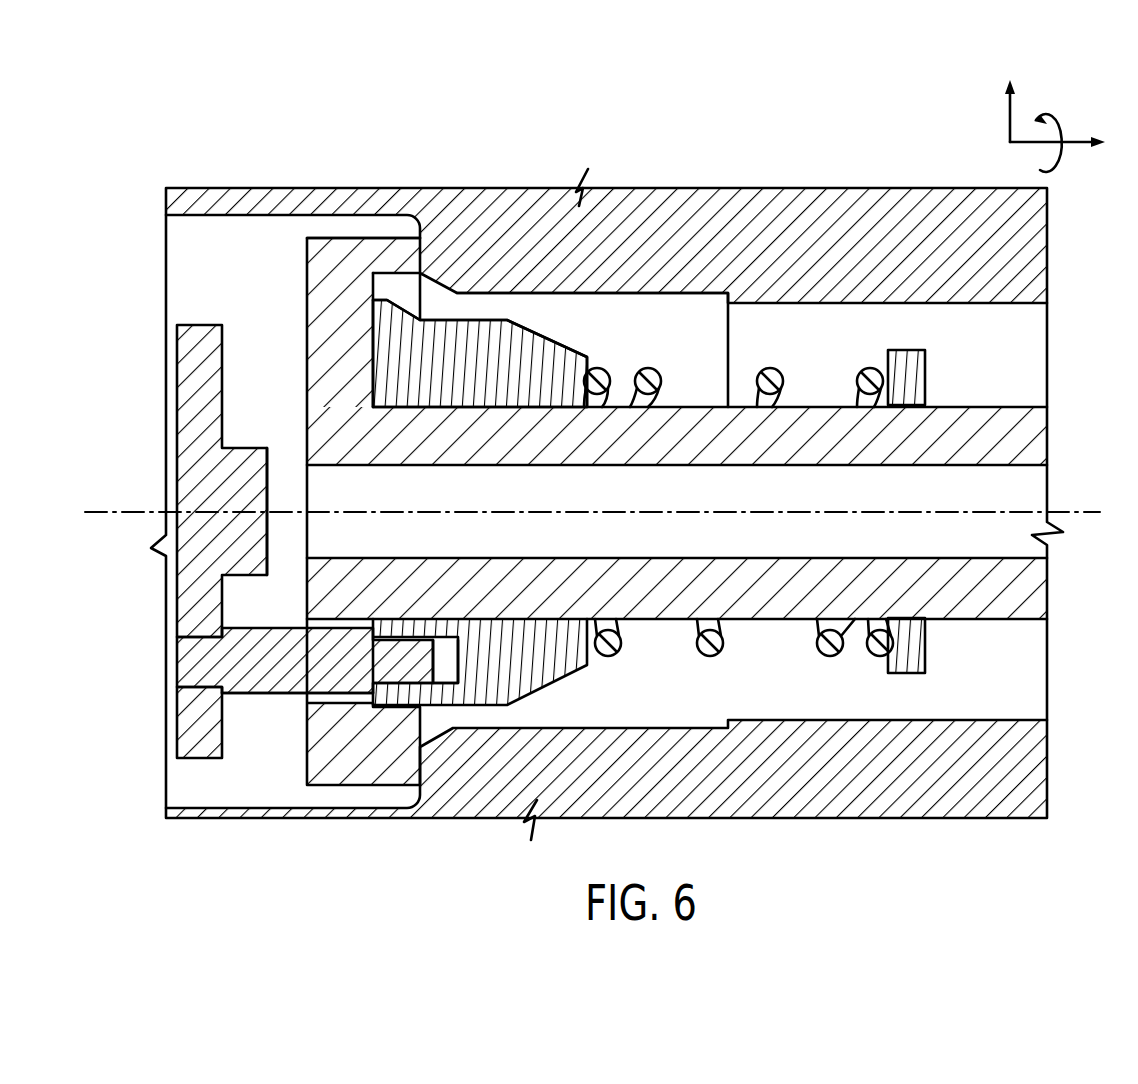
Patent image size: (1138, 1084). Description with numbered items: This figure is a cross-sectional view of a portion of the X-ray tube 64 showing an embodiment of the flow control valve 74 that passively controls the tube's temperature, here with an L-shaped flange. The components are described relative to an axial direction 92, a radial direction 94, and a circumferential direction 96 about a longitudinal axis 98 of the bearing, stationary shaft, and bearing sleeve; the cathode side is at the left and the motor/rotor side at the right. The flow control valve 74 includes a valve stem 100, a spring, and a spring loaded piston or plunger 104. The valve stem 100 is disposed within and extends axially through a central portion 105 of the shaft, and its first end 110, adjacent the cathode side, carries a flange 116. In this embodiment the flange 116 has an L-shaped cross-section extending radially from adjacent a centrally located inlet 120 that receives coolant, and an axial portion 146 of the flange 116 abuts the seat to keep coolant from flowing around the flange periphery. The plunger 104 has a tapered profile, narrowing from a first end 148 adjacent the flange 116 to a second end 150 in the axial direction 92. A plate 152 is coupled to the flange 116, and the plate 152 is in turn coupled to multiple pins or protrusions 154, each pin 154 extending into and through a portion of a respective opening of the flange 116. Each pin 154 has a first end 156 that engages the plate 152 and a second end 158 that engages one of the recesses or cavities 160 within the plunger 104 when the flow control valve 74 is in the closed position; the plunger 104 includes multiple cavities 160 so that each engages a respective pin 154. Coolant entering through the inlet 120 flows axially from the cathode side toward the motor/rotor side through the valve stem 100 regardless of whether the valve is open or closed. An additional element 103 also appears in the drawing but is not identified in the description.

The X-ray tube 64 is at (185, 167).
The flow control valve 74 is at (677, 333).
The axial direction 92 is at (1073, 150).
The radial direction 94 is at (1010, 128).
The circumferential direction 96 is at (1050, 117).
The longitudinal axis 98 is at (1078, 512).
The valve stem 100 is at (700, 430).
The spring coil 103 is at (640, 367).
The plunger 104 is at (487, 337).
The central portion of the shaft 105 is at (826, 400).
The first end of the valve stem 110 is at (287, 563).
The flange 116 is at (307, 256).
The inlet 120 is at (338, 487).
The axial portion of the flange 146 is at (373, 257).
The first end of the plunger 148 is at (372, 330).
The second end of the plunger 150 is at (587, 370).
The plate 152 is at (198, 393).
The pin 154 is at (277, 670).
The first end of the pin 156 is at (177, 655).
The second end of the pin 158 is at (408, 683).
The cavity 160 is at (445, 663).